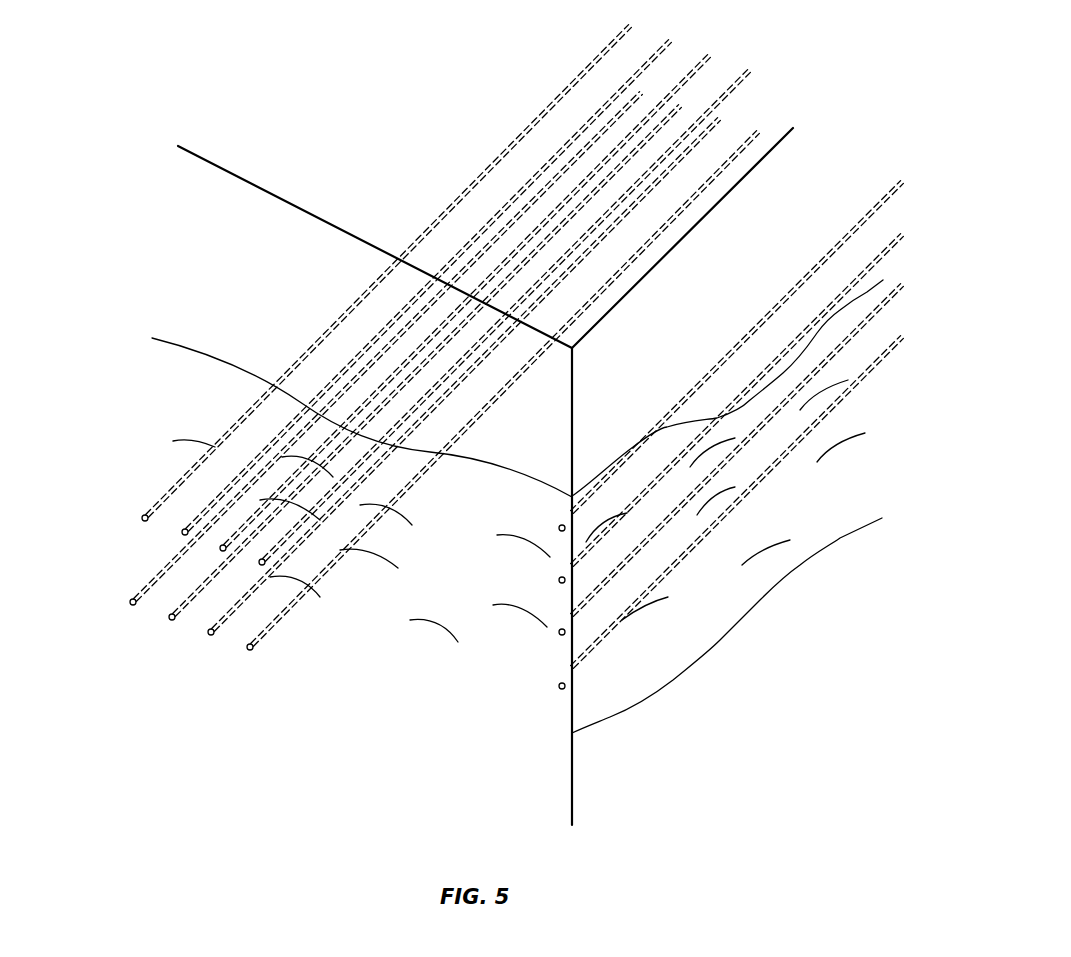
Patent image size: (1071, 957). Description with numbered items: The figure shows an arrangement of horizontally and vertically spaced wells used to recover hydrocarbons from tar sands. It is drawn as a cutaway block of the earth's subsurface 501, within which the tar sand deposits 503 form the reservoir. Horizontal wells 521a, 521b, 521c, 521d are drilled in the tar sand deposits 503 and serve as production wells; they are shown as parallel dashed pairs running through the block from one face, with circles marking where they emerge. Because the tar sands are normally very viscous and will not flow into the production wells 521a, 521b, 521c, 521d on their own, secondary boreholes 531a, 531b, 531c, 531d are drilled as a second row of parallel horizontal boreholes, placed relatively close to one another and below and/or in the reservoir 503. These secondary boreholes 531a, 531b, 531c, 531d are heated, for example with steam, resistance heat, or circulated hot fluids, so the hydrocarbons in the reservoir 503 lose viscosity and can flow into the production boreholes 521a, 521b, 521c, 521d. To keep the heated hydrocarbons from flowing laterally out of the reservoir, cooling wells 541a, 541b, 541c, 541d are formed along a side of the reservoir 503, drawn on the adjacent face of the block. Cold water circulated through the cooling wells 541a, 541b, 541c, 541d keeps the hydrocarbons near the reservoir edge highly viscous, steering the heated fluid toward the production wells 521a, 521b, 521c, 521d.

The earth's subsurface 501 is at (266, 248).
The tar sand deposits 503 is at (684, 661).
The horizontal well 521a is at (143, 516).
The horizontal well 521b is at (185, 529).
The horizontal well 521c is at (223, 545).
The horizontal well 521d is at (262, 559).
The secondary borehole 531a is at (130, 602).
The secondary borehole 531b is at (170, 619).
The secondary borehole 531c is at (210, 635).
The secondary borehole 531d is at (249, 650).
The cooling well 541a is at (558, 529).
The cooling well 541b is at (558, 580).
The cooling well 541c is at (558, 632).
The cooling well 541d is at (558, 687).